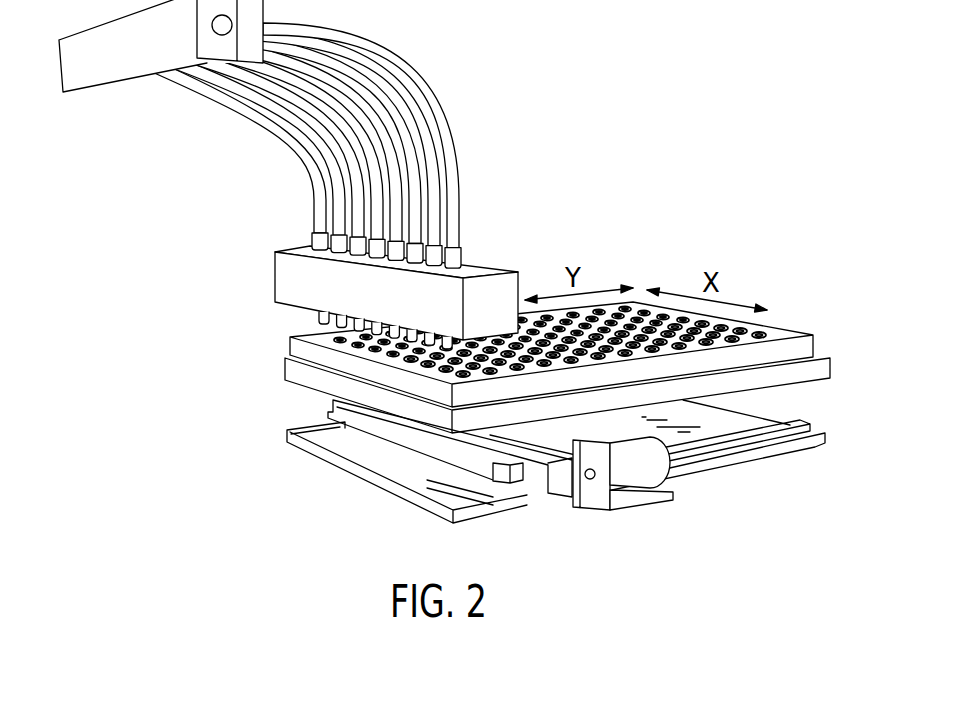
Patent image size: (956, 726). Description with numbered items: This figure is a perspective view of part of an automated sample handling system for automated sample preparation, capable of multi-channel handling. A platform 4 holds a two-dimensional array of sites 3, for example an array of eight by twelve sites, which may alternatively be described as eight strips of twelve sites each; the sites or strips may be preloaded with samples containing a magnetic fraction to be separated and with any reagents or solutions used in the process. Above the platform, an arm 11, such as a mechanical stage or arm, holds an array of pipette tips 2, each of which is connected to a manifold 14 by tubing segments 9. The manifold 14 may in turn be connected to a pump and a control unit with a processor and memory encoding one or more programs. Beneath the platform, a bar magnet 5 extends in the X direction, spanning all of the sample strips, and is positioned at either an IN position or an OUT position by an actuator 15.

The pipette tips 2 is at (315, 317).
The array of sites 3 is at (787, 330).
The platform 4 is at (290, 364).
The bar magnet 5 is at (410, 457).
The tubing segments 9 is at (442, 143).
The arm 11 is at (487, 267).
The manifold 14 is at (170, 86).
The actuator 15 is at (650, 505).